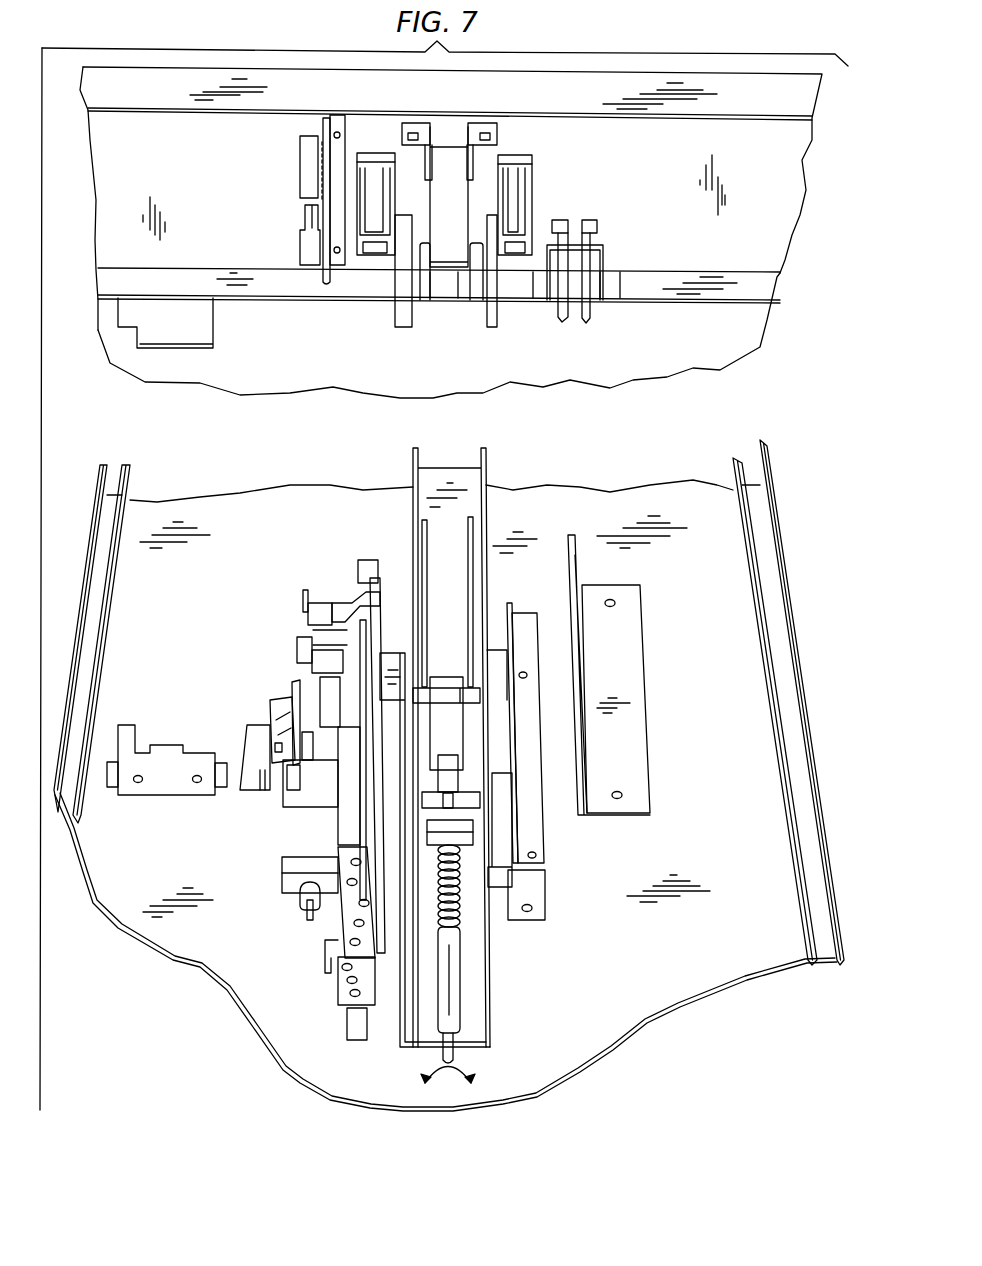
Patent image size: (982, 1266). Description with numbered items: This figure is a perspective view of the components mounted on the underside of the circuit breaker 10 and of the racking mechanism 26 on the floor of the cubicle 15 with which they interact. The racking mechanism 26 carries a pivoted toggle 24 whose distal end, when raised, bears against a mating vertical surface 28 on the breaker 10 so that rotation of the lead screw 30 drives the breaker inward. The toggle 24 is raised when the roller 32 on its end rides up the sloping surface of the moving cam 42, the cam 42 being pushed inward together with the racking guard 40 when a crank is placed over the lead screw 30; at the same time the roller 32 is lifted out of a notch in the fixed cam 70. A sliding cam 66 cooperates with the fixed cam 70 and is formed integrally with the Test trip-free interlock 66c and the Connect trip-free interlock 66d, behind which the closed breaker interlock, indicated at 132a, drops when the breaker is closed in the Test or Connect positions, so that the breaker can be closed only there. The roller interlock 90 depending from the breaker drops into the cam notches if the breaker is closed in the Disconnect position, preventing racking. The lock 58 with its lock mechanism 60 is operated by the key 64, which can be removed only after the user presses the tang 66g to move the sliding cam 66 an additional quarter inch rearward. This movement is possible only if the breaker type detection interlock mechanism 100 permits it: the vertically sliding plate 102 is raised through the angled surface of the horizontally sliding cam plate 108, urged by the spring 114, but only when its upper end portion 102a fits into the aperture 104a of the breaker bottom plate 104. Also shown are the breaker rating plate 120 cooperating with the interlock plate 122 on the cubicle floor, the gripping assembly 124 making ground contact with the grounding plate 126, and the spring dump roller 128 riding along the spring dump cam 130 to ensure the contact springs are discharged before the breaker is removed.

The circuit breaker 10 is at (167, 170).
The cubicle 15 is at (167, 591).
The toggle 24 is at (462, 673).
The racking mechanism 26 is at (527, 967).
The vertical surface 28 is at (453, 258).
The lead screw 30 is at (458, 917).
The roller 32 is at (430, 677).
The racking guard 40 is at (462, 985).
The moving cam 42 is at (420, 888).
The lock 58 is at (283, 870).
The lock mechanism 60 is at (305, 898).
The key 64 is at (308, 918).
The sliding cam 66 is at (376, 580).
The Test trip-free interlock 66c is at (315, 803).
The Connect trip-free interlock 66d is at (307, 615).
The tang 66g is at (327, 958).
The fixed cam 70 is at (358, 578).
The roller interlock 90 is at (377, 256).
The breaker type detection interlock mechanism 100 is at (292, 633).
The vertically sliding plate 102 is at (297, 650).
The upper end portion 102a is at (320, 603).
The breaker bottom plate 104 is at (304, 156).
The aperture 104a is at (312, 274).
The horizontally sliding cam plate 108 is at (243, 735).
The spring 114 is at (293, 692).
The breaker rating plate 120 is at (203, 348).
The interlock plate 122 is at (165, 792).
The gripping assembly 124 is at (603, 244).
The grounding plate 126 is at (643, 622).
The spring dump roller 128 is at (515, 255).
The spring dump cam 130 is at (545, 700).
The stop block end 132a is at (303, 605).